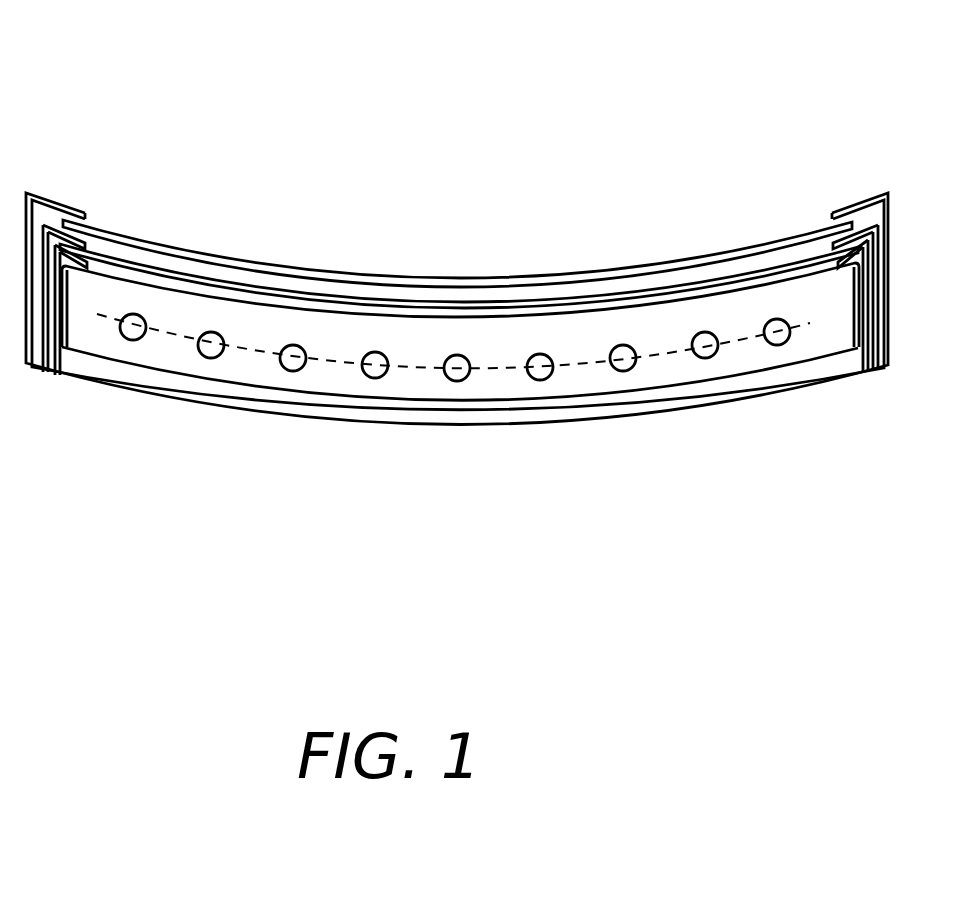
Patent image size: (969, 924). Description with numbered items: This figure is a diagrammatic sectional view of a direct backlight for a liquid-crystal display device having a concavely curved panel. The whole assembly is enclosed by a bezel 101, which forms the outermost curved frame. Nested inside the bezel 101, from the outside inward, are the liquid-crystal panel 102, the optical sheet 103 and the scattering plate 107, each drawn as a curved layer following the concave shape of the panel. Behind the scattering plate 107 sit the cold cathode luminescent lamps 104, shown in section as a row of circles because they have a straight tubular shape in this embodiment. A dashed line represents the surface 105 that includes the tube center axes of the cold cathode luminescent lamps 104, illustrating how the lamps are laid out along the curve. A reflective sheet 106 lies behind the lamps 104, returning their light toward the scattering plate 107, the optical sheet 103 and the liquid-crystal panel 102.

The bezel 101 is at (47, 197).
The liquid-crystal panel 102 is at (173, 247).
The optical sheet 103 is at (293, 292).
The cold cathode luminescent lamps 104 is at (287, 372).
The surface including the tube center axes of the cold cathode luminescent lamps 105 is at (495, 372).
The reflective sheet 106 is at (368, 402).
The scattering plate 107 is at (405, 317).